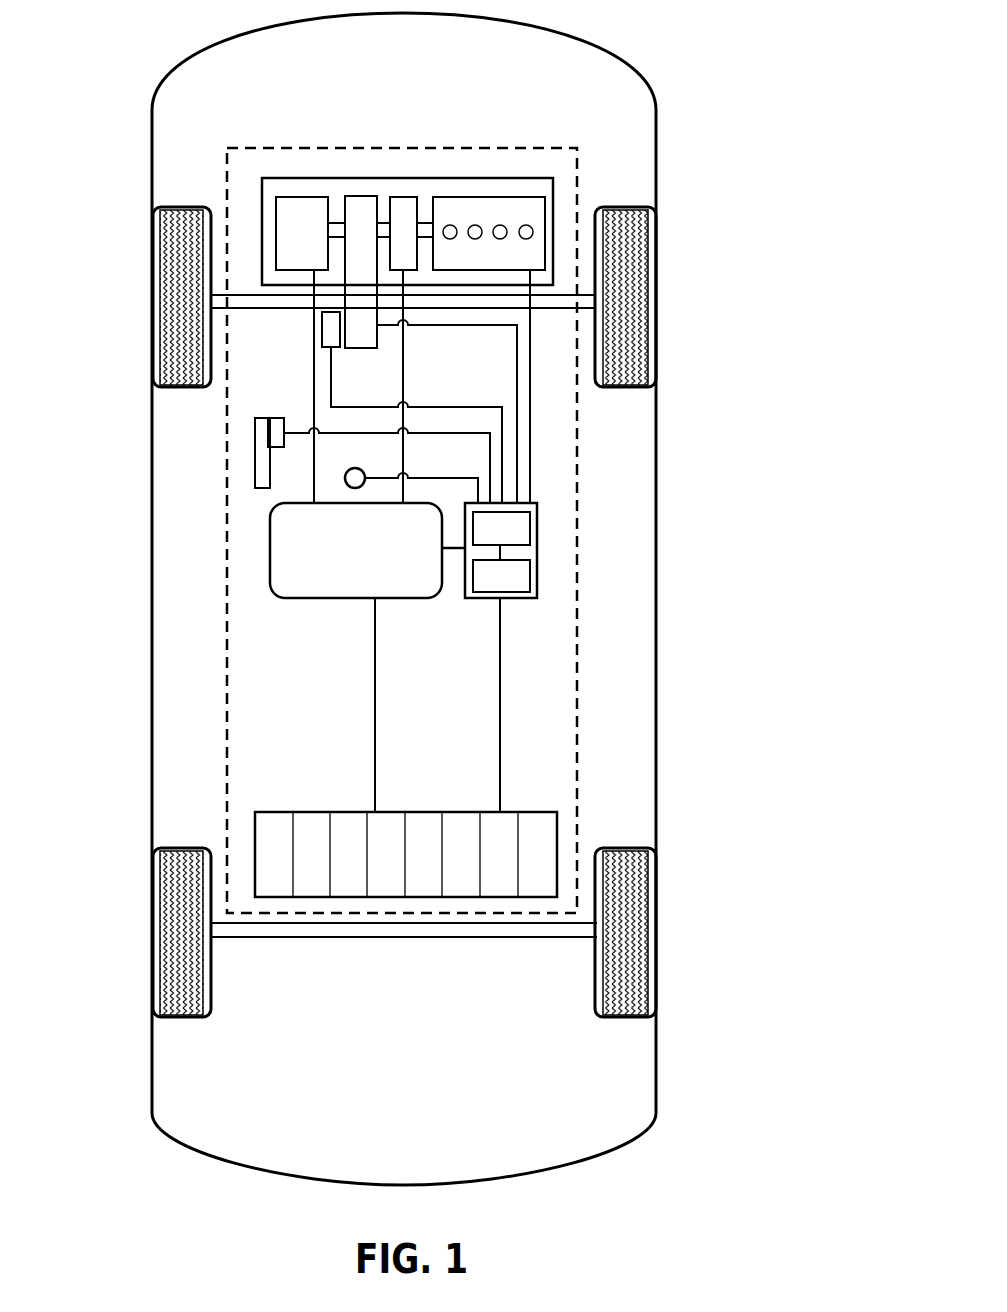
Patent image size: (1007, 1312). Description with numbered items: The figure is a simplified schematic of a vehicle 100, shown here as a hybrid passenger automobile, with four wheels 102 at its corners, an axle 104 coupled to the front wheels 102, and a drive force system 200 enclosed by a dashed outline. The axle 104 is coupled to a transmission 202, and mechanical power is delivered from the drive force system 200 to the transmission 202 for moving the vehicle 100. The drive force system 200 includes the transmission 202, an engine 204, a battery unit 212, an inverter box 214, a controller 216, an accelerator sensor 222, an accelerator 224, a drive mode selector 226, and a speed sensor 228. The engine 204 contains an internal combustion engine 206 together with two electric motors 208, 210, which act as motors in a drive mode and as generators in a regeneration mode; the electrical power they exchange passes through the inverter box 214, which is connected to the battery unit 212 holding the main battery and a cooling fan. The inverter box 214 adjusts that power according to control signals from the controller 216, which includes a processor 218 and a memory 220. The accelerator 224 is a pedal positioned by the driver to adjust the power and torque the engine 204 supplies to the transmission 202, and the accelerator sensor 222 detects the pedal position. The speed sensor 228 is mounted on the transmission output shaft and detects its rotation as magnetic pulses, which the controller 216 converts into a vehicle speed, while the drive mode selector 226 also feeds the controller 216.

The vehicle 100 is at (760, 100).
The wheels 102 is at (151, 268).
The axle 104 is at (246, 294).
The drive force system 200 is at (226, 515).
The transmission 202 is at (367, 196).
The engine 204 is at (542, 178).
The internal combustion engine 206 is at (497, 197).
The electric motor 208 is at (407, 197).
The electric motor 210 is at (300, 197).
The battery unit 212 is at (313, 812).
The inverter box 214 is at (333, 598).
The controller 216 is at (537, 510).
The processor 218 is at (537, 533).
The memory 220 is at (537, 575).
The accelerator sensor 222 is at (278, 418).
The accelerator 224 is at (255, 440).
The drive mode selector 226 is at (355, 468).
The speed sensor 228 is at (322, 325).